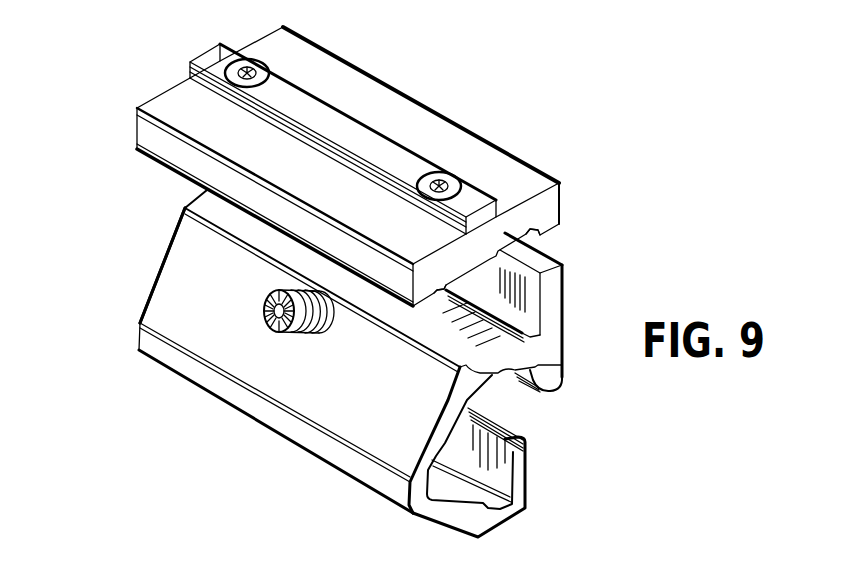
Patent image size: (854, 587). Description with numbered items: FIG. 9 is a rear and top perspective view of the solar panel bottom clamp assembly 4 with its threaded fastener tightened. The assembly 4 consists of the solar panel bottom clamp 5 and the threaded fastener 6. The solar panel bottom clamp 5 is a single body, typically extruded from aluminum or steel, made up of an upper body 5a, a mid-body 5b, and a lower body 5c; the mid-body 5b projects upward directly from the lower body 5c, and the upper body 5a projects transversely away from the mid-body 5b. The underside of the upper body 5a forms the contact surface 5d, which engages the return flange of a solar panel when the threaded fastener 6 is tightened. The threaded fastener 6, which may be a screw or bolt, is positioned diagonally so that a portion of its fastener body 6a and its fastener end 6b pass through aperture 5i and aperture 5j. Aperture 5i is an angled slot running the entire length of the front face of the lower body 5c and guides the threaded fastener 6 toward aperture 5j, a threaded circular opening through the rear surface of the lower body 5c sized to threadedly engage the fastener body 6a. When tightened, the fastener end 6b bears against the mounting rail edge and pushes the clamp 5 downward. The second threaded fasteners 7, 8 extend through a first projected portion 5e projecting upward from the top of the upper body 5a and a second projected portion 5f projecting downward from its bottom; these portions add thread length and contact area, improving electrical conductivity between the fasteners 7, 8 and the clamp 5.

The solar panel bottom clamp assembly 4 is at (402, 200).
The solar panel bottom clamp 5 is at (349, 363).
The upper body 5a is at (425, 100).
The mid-body 5b is at (566, 280).
The lower body 5c is at (143, 306).
The contact surface 5d is at (553, 233).
The first projected portion 5e is at (327, 100).
The second projected portion 5f is at (563, 305).
The aperture 5i is at (533, 418).
The aperture 5j is at (325, 337).
The threaded fastener 6 is at (241, 394).
The fastener body 6a is at (310, 337).
The fastener end 6b is at (264, 311).
The second threaded fastener 7 is at (263, 62).
The second threaded fastener 8 is at (447, 177).